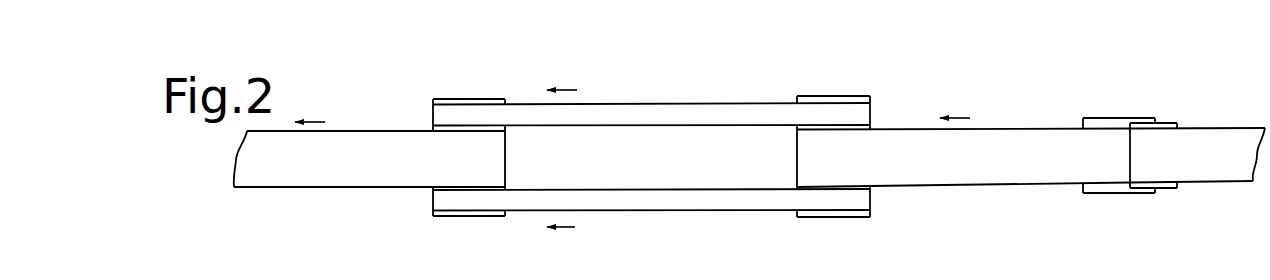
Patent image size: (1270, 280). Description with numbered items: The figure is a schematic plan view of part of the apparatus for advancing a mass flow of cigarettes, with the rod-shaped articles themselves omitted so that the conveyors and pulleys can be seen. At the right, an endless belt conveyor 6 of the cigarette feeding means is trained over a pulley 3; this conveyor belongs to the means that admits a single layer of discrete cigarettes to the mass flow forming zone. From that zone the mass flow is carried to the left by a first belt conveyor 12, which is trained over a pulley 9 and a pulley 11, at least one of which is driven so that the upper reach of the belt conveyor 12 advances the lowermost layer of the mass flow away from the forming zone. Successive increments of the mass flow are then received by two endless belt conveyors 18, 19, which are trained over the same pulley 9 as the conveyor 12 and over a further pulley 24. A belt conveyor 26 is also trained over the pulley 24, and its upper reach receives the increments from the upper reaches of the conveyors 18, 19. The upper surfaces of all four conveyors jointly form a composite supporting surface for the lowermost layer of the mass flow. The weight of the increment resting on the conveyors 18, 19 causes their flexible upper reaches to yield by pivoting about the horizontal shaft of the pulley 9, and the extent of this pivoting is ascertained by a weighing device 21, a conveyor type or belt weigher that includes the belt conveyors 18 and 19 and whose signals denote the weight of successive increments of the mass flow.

The belt conveyor 26 is at (369, 143).
The pulley 24 is at (448, 103).
The endless belt conveyor 18 is at (655, 111).
The endless belt conveyor 19 is at (665, 205).
The weighing device 21 is at (612, 178).
The pulley 9 is at (842, 99).
The belt conveyor 12 is at (988, 175).
The pulley 11 is at (1100, 123).
The pulley 3 is at (1172, 123).
The endless belt conveyor 6 is at (1237, 133).